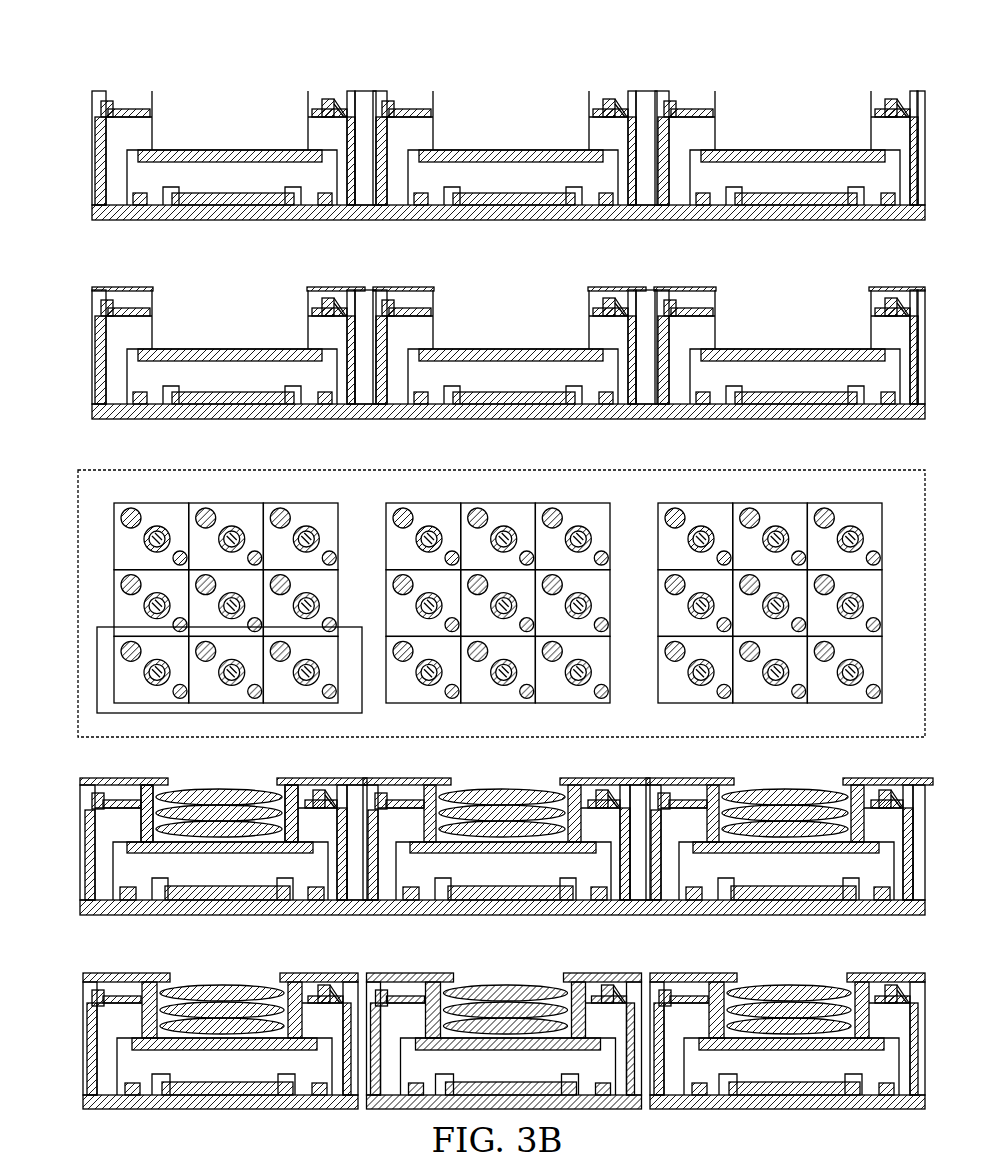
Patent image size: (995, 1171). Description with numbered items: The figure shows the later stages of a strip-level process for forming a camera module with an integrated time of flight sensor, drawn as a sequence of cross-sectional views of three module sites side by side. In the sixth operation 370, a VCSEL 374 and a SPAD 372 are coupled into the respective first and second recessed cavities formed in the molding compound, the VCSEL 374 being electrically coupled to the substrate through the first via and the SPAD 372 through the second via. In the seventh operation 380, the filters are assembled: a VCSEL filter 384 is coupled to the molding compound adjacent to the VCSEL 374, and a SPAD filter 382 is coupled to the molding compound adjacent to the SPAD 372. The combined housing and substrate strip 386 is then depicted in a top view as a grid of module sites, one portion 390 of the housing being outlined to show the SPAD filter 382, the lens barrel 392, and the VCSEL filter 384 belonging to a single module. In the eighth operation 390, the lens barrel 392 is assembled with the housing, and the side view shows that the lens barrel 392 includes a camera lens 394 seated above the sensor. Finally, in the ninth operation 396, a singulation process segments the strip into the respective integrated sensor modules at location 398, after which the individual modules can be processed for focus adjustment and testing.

The sixth operation 370 is at (846, 58).
The SPAD 372 is at (128, 104).
The VCSEL 374 is at (333, 98).
The seventh operation 380 is at (848, 282).
The SPAD filter 382 is at (122, 288).
The VCSEL filter 384 is at (336, 289).
The combined housing and substrate strip 386 is at (877, 487).
The eighth operation 390 is at (110, 626).
The lens barrel 392 is at (144, 676).
The camera lens 394 is at (215, 790).
The ninth operation 396 is at (889, 967).
The location 398 is at (373, 969).